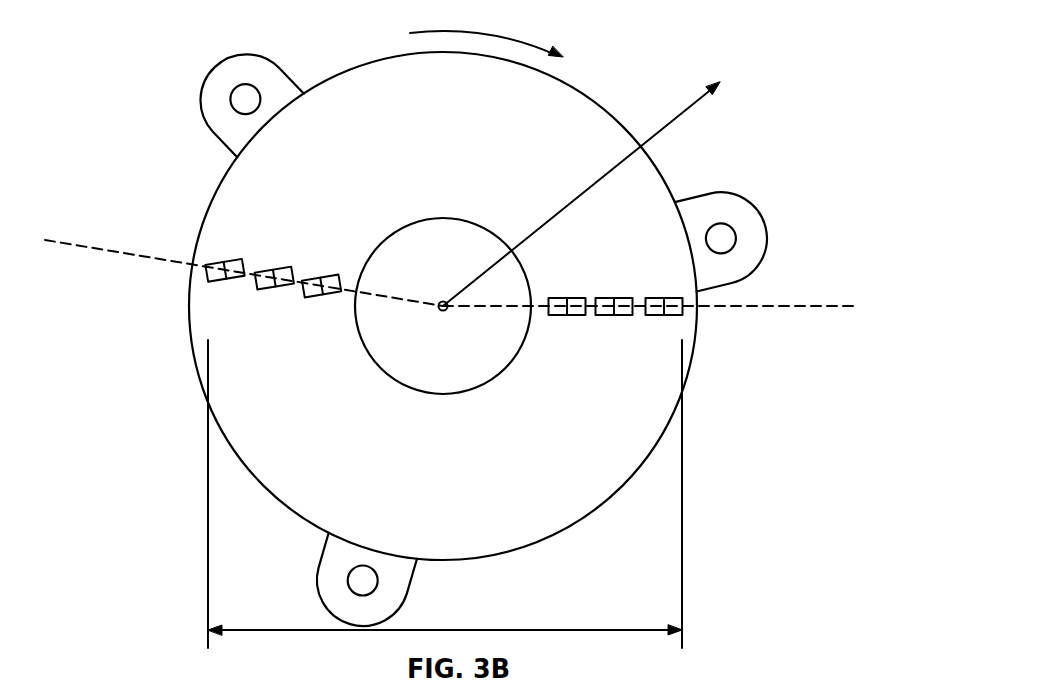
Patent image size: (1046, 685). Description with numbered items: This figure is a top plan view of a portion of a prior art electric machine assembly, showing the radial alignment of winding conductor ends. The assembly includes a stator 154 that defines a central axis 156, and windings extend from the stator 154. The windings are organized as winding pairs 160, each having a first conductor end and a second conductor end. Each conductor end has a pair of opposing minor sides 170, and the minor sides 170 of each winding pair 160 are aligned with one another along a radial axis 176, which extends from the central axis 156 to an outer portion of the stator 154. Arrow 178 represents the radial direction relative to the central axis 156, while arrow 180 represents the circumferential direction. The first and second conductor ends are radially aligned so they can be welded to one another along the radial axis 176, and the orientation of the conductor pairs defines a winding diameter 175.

The stator 154 is at (687, 188).
The central axis 156 is at (442, 302).
The winding pairs 160 is at (322, 303).
The minor sides 170 is at (576, 297).
The winding diameter 175 is at (297, 632).
The radial axis 176 is at (63, 240).
The radial direction arrow 178 is at (682, 112).
The circumferential direction arrow 180 is at (520, 41).